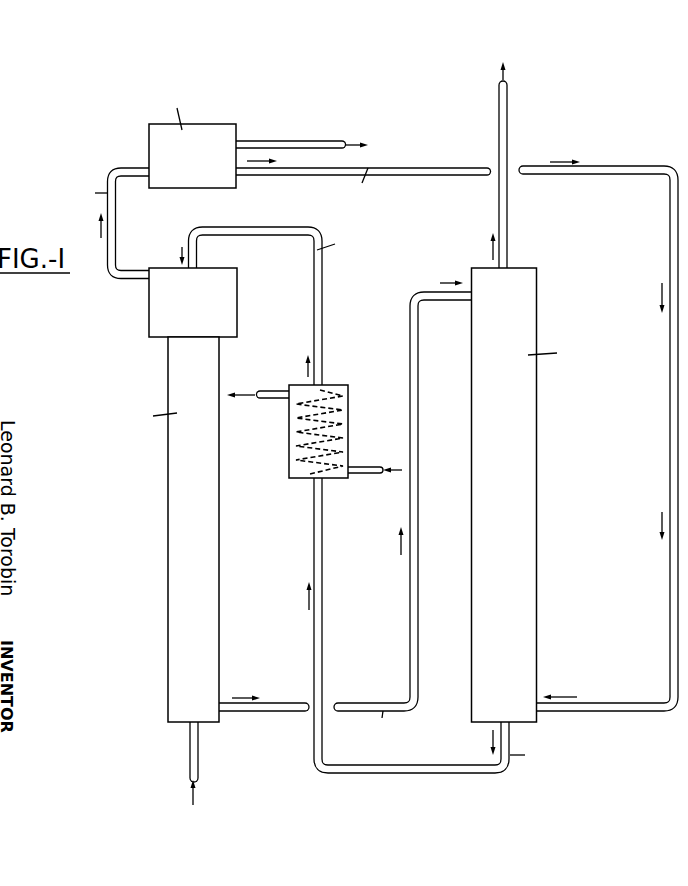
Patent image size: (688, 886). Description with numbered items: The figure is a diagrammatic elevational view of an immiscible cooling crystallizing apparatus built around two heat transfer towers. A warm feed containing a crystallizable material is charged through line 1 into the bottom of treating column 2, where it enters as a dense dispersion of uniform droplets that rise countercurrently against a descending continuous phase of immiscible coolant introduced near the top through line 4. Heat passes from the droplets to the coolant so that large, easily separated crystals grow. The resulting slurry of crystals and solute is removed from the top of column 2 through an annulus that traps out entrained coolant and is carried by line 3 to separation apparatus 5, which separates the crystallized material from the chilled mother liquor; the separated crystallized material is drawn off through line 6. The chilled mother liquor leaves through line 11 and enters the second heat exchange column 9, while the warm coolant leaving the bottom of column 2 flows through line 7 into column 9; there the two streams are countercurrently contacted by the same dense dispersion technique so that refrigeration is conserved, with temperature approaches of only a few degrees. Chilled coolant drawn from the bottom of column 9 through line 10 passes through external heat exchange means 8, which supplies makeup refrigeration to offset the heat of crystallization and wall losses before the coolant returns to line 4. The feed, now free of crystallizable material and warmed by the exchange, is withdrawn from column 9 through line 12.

The line 1 is at (193, 758).
The treating column 2 is at (172, 467).
The line 3 is at (116, 229).
The line 4 is at (322, 338).
The separation apparatus 5 is at (153, 142).
The wax outlet pipe 6 is at (290, 142).
The line 7 is at (433, 377).
The external heat exchange means 8 is at (348, 437).
The heat exchange column 9 is at (528, 437).
The line 10 is at (482, 770).
The line 11 is at (283, 170).
The line 12 is at (507, 125).